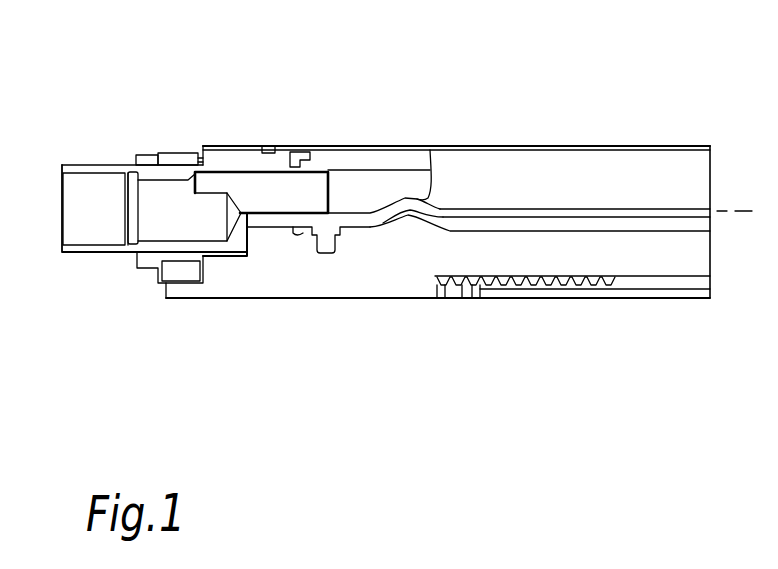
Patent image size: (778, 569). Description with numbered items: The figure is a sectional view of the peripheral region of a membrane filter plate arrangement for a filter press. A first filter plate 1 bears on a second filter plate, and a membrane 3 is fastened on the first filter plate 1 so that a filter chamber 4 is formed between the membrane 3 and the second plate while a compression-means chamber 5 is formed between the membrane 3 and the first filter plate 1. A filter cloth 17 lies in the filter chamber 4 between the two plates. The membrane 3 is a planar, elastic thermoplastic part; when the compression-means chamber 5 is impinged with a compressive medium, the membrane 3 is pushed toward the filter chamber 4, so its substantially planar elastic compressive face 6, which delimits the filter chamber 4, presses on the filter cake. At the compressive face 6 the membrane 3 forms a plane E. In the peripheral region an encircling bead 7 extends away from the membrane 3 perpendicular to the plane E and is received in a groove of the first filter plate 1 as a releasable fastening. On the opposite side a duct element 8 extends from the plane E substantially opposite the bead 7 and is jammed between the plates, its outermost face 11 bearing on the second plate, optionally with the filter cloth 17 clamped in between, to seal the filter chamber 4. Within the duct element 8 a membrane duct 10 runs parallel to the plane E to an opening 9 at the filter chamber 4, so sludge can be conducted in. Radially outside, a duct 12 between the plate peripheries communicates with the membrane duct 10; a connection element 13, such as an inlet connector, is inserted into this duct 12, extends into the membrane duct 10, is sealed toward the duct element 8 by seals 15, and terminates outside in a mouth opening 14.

The first filter plate 1 is at (302, 278).
The membrane 3 is at (390, 221).
The filter chamber 4 is at (553, 195).
The compression-means chamber 5 is at (632, 226).
The compressive face 6 is at (613, 204).
The bead 7 is at (322, 253).
The duct element 8 is at (380, 160).
The opening 9 is at (448, 191).
The membrane duct 10 is at (420, 193).
The outermost face 11 is at (357, 150).
The duct 12 is at (281, 206).
The connection element 13 is at (230, 241).
The mouth opening 14 is at (41, 223).
The seals 15 is at (326, 171).
The filter cloth 17 is at (546, 146).
The plane E is at (743, 208).